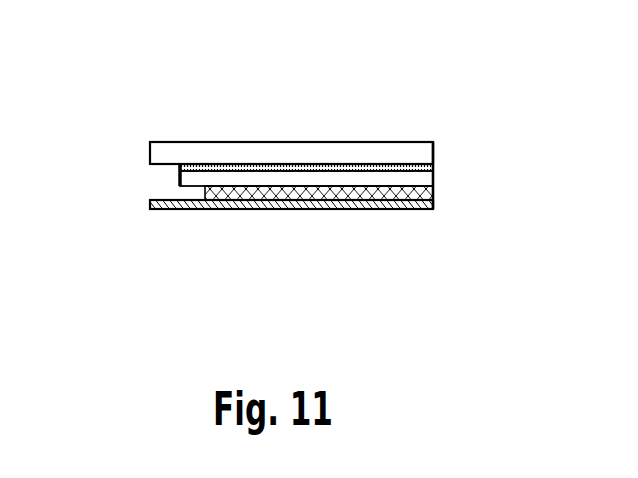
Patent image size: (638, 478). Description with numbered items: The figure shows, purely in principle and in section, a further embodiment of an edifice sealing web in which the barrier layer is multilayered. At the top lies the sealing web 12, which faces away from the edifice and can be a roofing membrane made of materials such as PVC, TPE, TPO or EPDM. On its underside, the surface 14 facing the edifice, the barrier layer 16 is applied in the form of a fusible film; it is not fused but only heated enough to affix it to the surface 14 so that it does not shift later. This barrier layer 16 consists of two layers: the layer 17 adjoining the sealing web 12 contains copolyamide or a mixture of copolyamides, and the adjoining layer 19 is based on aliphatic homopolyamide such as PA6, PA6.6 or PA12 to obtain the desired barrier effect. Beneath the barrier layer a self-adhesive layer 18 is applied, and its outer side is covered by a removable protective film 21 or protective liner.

The sealing web 12 is at (173, 150).
The surface 14 is at (176, 167).
The barrier layer 16 is at (441, 162).
The layer 17 is at (176, 178).
The self-adhesive layer 18 is at (418, 207).
The layer 19 is at (176, 188).
The removable protective film 21 is at (195, 209).